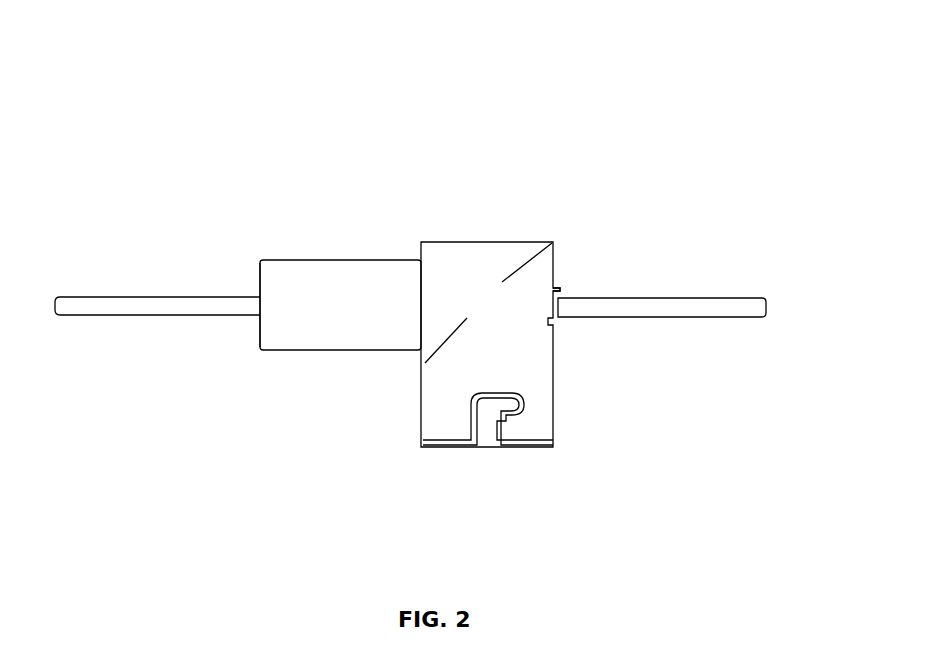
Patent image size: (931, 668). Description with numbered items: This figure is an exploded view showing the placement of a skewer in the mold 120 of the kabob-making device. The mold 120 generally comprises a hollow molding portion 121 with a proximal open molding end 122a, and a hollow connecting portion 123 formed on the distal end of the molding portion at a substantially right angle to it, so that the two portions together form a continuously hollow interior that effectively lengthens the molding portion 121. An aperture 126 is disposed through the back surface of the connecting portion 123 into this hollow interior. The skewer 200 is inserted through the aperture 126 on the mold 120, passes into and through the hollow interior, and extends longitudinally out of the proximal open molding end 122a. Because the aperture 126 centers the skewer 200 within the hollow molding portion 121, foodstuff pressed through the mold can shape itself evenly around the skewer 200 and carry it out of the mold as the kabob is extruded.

The mold 120 is at (678, 88).
The hollow molding portion 121 is at (318, 258).
The proximal open molding end 122a is at (262, 282).
The aperture 126 is at (568, 288).
The hollow connecting portion 123 is at (560, 418).
The skewer 200 is at (99, 298).